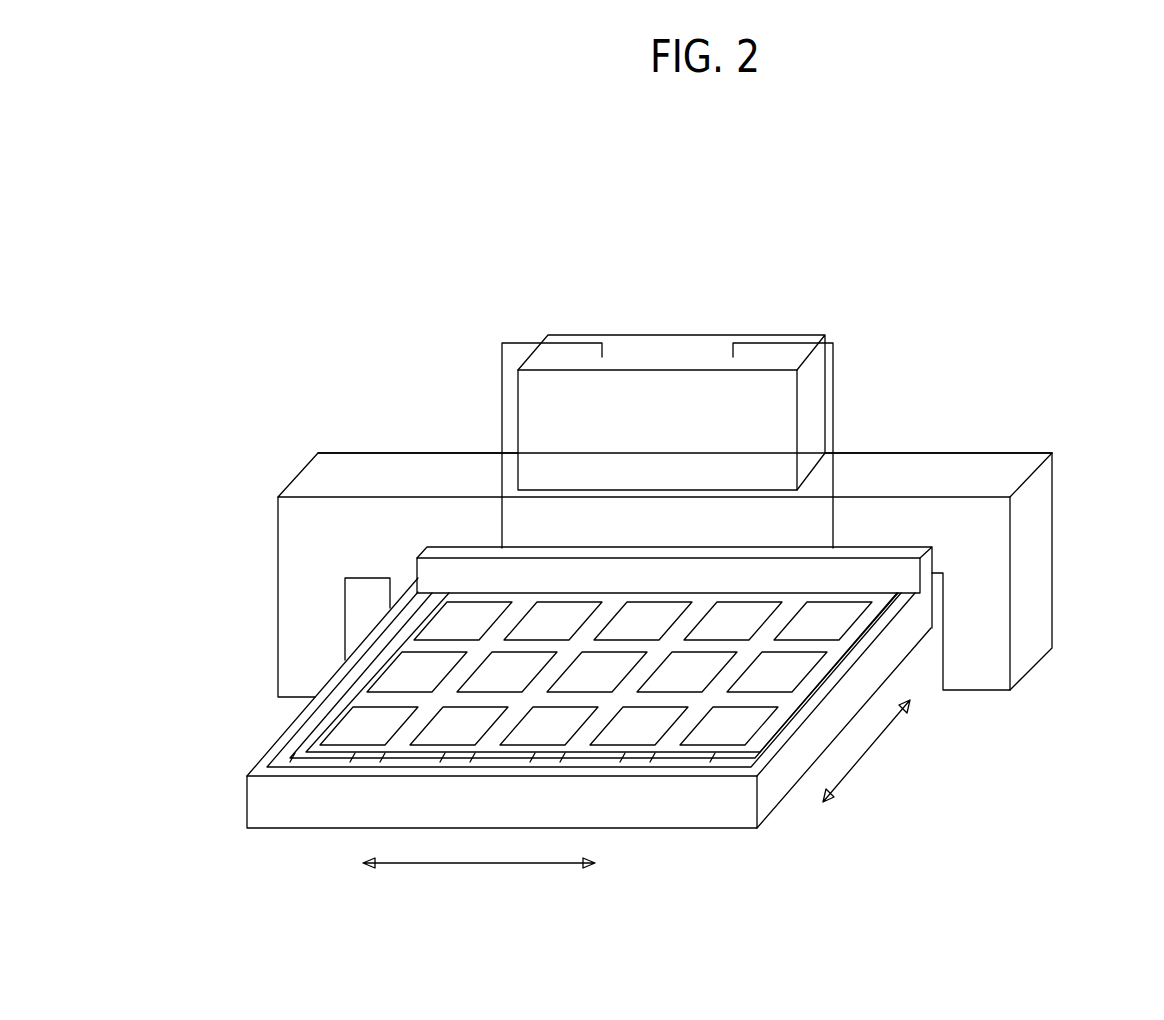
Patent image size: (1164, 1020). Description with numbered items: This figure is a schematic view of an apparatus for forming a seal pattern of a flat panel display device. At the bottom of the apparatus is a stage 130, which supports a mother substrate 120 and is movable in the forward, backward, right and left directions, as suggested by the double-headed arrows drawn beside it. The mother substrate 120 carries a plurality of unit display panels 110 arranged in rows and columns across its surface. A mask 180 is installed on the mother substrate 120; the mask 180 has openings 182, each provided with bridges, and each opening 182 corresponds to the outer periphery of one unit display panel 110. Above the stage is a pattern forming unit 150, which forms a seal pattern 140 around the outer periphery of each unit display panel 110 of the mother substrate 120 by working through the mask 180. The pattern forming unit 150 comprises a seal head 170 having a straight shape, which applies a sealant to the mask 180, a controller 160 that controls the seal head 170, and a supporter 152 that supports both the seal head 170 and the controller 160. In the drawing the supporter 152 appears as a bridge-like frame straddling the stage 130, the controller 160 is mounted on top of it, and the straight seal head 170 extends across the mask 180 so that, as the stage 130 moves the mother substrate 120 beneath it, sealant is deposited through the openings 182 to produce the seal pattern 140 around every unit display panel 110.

The unit display panel 110 is at (313, 758).
The mother substrate 120 is at (280, 760).
The stage 130 is at (615, 813).
The seal pattern 140 is at (322, 721).
The pattern forming unit 150 is at (336, 270).
The supporter 152 is at (1037, 632).
The controller 160 is at (813, 395).
The seal head 170 is at (927, 565).
The mask 180 is at (762, 743).
The opening 182 is at (722, 735).